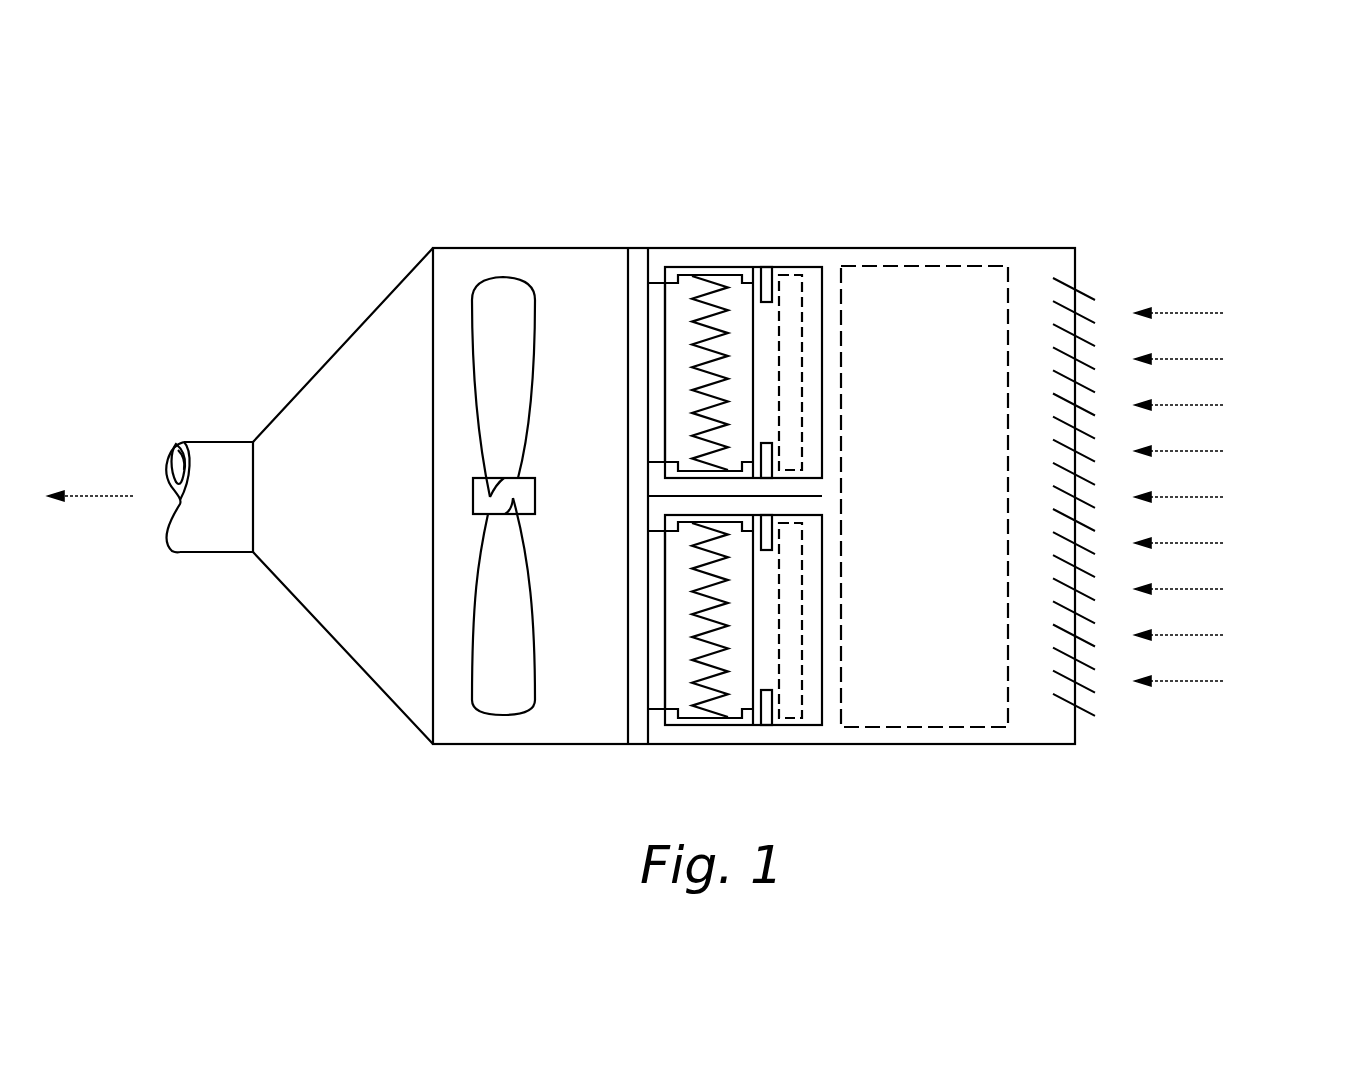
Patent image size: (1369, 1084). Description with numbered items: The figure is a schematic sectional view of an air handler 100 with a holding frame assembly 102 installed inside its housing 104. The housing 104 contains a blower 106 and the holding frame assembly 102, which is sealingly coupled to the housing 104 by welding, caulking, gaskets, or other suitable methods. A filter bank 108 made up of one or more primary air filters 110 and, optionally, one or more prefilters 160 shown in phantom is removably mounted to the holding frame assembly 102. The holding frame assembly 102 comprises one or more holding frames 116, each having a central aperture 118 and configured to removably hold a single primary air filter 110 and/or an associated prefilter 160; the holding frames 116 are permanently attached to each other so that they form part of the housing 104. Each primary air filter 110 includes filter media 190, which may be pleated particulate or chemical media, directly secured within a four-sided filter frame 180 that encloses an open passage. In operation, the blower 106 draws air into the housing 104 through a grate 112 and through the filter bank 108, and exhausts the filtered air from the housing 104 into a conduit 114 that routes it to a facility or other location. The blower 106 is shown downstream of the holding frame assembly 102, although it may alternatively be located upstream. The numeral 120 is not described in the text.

The air handler 100 is at (1178, 131).
The holding frame assembly 102 is at (670, 258).
The housing 104 is at (463, 247).
The blower 106 is at (520, 442).
The filter bank 108 is at (697, 221).
The primary air filter 110 is at (718, 267).
The grate 112 is at (1105, 273).
The conduit 114 is at (207, 442).
The holding frame 116 is at (777, 258).
The central aperture 118 is at (656, 388).
The chamber 120 is at (670, 421).
The prefilter 160 is at (801, 338).
The filter frame 180 is at (673, 284).
The filter media 190 is at (700, 357).